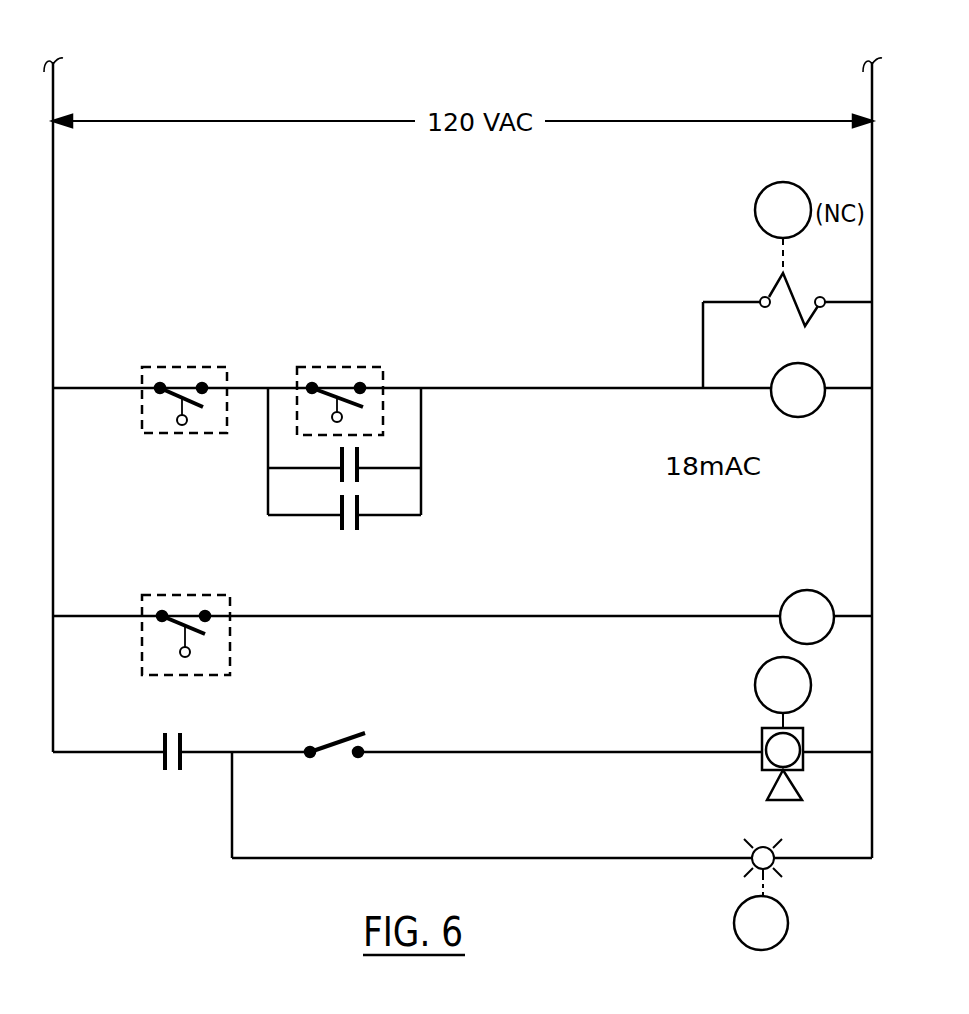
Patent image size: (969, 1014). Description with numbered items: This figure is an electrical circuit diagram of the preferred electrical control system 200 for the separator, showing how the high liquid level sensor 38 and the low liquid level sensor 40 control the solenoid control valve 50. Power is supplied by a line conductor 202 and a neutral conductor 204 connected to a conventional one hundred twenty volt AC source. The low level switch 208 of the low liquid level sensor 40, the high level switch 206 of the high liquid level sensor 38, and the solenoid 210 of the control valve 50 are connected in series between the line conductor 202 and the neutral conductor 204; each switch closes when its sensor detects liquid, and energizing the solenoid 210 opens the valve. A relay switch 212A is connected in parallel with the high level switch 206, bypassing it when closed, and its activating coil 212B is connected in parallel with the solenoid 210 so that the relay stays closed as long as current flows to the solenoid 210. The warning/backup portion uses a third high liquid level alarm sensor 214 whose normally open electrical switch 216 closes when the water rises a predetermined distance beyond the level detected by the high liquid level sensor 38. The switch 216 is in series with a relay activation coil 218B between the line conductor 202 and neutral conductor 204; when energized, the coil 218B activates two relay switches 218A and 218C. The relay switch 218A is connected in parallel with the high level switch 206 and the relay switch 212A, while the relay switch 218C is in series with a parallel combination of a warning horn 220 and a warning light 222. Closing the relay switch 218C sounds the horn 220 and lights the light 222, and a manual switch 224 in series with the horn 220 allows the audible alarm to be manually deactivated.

The electrical control system 200 is at (576, 98).
The line conductor 202 is at (53, 180).
The neutral conductor 204 is at (872, 153).
The solenoid control valve 50 is at (760, 194).
The solenoid 210 is at (772, 290).
The activating coil 212B is at (785, 417).
The low level switch 208 is at (172, 384).
The low liquid level sensor 40 is at (140, 418).
The high level switch 206 is at (342, 384).
The high liquid level sensor 38 is at (383, 413).
The relay switch 212A is at (340, 471).
The relay switch 218A is at (360, 520).
The electrical switch 216 is at (180, 613).
The high liquid level alarm sensor 214 is at (230, 647).
The relay activation coil 218B is at (790, 592).
The warning horn 220 is at (762, 740).
The warning light 222 is at (757, 845).
The manual switch 224 is at (345, 738).
The relay switch 218C is at (160, 760).